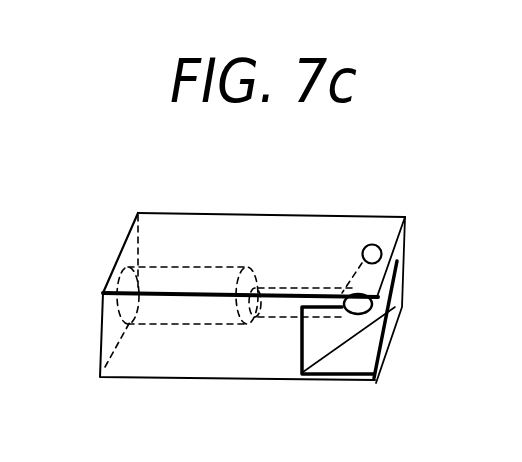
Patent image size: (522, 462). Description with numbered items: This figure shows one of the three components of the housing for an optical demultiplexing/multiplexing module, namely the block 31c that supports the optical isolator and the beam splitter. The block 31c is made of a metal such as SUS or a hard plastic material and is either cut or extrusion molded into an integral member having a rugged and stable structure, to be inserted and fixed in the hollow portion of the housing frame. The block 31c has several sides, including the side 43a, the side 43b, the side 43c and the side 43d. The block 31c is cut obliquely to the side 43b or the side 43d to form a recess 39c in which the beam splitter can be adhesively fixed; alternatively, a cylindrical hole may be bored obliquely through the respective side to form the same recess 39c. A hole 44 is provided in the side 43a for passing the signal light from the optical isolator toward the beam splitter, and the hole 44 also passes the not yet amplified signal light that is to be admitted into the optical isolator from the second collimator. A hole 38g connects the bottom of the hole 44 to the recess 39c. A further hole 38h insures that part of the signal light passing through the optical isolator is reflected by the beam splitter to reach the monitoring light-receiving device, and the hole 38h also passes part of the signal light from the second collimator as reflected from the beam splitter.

The block 31c is at (313, 233).
The hole 38g is at (283, 310).
The hole 38h is at (375, 245).
The recess 39c is at (330, 338).
The side 43a is at (120, 255).
The side 43b is at (405, 276).
The side 43c is at (243, 212).
The side 43d is at (207, 357).
The hole 44 is at (163, 308).